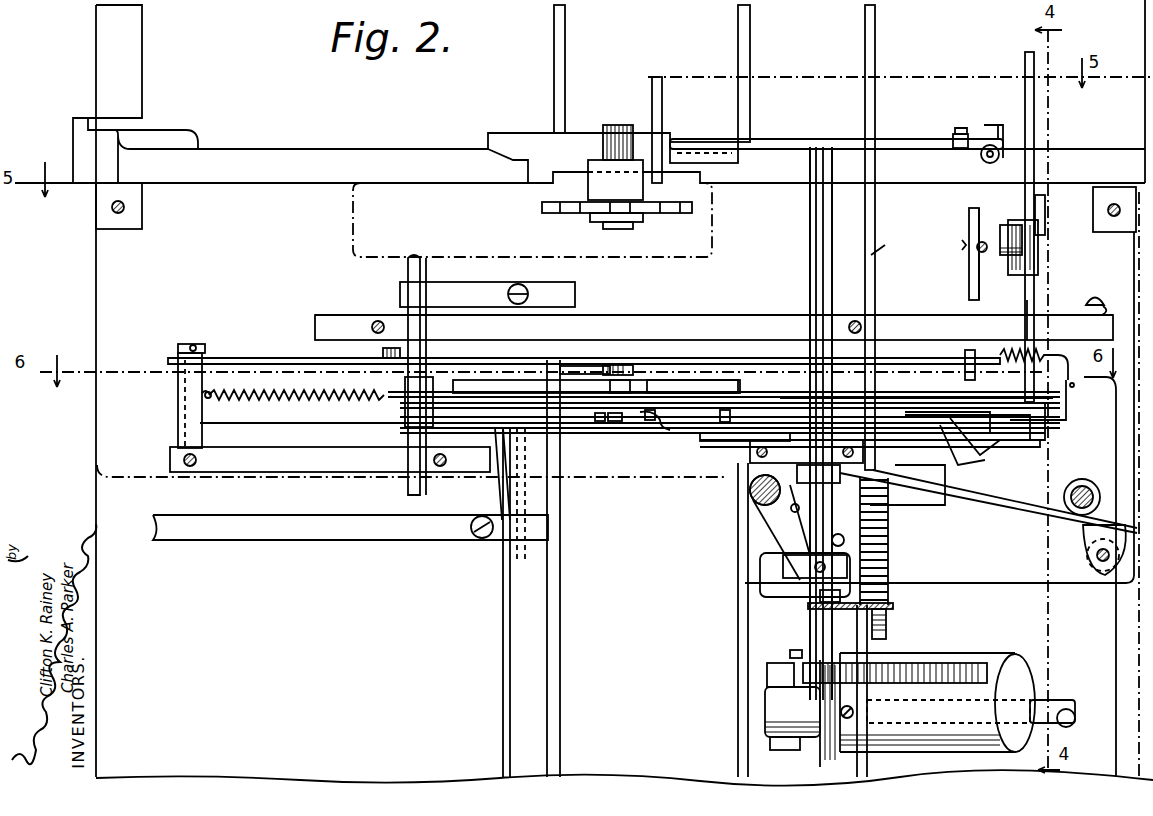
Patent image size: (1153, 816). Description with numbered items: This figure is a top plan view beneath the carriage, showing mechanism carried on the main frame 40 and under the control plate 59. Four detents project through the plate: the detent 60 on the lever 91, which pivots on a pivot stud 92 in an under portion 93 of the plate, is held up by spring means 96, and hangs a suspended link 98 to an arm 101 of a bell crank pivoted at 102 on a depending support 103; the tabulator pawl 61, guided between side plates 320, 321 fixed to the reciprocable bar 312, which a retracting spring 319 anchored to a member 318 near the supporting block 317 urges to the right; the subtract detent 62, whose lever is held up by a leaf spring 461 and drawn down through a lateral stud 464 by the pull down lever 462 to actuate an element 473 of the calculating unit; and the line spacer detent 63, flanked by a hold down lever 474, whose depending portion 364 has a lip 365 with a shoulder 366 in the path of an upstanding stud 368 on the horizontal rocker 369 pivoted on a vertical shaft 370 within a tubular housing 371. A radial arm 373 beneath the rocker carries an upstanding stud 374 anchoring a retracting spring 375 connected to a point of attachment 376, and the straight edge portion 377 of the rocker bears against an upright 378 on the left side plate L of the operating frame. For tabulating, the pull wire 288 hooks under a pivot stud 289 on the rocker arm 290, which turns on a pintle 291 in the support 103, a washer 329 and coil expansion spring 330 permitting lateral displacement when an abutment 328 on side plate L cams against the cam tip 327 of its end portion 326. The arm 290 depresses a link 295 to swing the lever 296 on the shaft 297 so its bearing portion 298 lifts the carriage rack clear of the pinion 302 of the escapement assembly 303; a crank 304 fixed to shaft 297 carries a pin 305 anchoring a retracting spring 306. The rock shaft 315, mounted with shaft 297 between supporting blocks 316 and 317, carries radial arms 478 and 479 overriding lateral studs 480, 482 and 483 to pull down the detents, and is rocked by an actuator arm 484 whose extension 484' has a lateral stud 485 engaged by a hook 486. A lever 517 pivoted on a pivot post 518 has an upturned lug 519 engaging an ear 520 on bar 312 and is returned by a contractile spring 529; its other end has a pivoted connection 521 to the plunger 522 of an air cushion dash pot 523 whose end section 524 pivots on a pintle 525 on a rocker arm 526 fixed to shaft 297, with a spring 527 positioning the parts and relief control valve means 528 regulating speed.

The main frame 40 is at (300, 149).
The pinion 302 is at (598, 178).
The flat bearing portion 298 is at (690, 142).
The escapement assembly 303 is at (545, 196).
The control plate 59 is at (740, 209).
The crank 304 is at (910, 150).
The lever 296 is at (926, 139).
The retracting spring 306 is at (957, 126).
The pin 305 is at (968, 134).
The link 295 is at (983, 162).
The pull wire 288 is at (1034, 136).
The lateral pivot stud 289 is at (1015, 228).
The depending support 103 is at (1000, 222).
The pivot 102 is at (965, 248).
The arm of bell crank lever 101 is at (968, 283).
The pintle 291 is at (1040, 237).
The washer 329 is at (1022, 263).
The lateral stud 485 is at (1097, 295).
The hook 486 is at (1104, 315).
The coil expansion spring 330 is at (1030, 308).
The supporting block 316 is at (885, 320).
The longitudinal extension 484' is at (714, 294).
The actuator arm 484 is at (487, 270).
The rock shaft 315 is at (406, 265).
The leaf spring 461 is at (387, 420).
The spring means 96 is at (388, 360).
The pivot stud 92 is at (197, 344).
The lever 91 is at (258, 358).
The suspended link 98 is at (965, 362).
The retracting spring 319 is at (304, 396).
The anchorage member 318 is at (212, 396).
The under portion of control plate 93 is at (180, 415).
The supporting block 317 is at (330, 458).
The radial arm 478 is at (450, 370).
The side plate 321 is at (512, 385).
The lateral stud 480 is at (578, 366).
The detent 60 is at (608, 365).
The tabulator pawl 61 is at (622, 385).
The side plate 320 is at (690, 385).
The shaft 297 is at (810, 246).
The radial arm 479 is at (454, 412).
The element of calculating unit 473 is at (505, 430).
The lateral stud 483 is at (604, 422).
The lateral stud 482 is at (614, 422).
The subtract detent 62 is at (655, 432).
The line spacer detent 63 is at (665, 435).
The lateral stud 464 is at (724, 422).
The reciprocable bar 312 is at (905, 395).
The pull down lever 462 is at (915, 440).
The rocker arm 290 is at (992, 378).
The contractile spring 529 is at (1000, 350).
The laterally directed ear 520 is at (1075, 386).
The upturned lug 519 is at (1070, 398).
The vertically depending portion 364 is at (870, 420).
The hold down lever 474 is at (870, 452).
The horizontal radial arm 373 is at (848, 472).
The lip 365 is at (750, 484).
The tubular housing 371 is at (754, 496).
The vertical shaft 370 is at (775, 526).
The horizontal rocker 369 is at (760, 556).
The upstanding stud 368 is at (795, 512).
The shoulder 366 is at (798, 556).
The upstanding stud 374 is at (845, 542).
The upright 378 is at (892, 563).
The retracting spring 375 is at (808, 604).
The point of attachment 376 is at (820, 604).
The straight edge portion 377 is at (838, 612).
The pintle 525 is at (793, 650).
The rocker arm 526 is at (767, 672).
The end section 524 is at (775, 703).
The air cushion dash pot 523 is at (962, 655).
The spring 527 is at (925, 666).
The plunger 522 is at (967, 705).
The relief control valve means 528 is at (855, 712).
The pivoted connection 521 is at (1076, 718).
The cam tip 327 is at (992, 455).
The laterally directed end portion 326 is at (968, 468).
The lever 517 is at (1068, 478).
The abutment 328 is at (940, 510).
The pivot post 518 is at (1066, 505).
The left hand side plate L is at (870, 258).